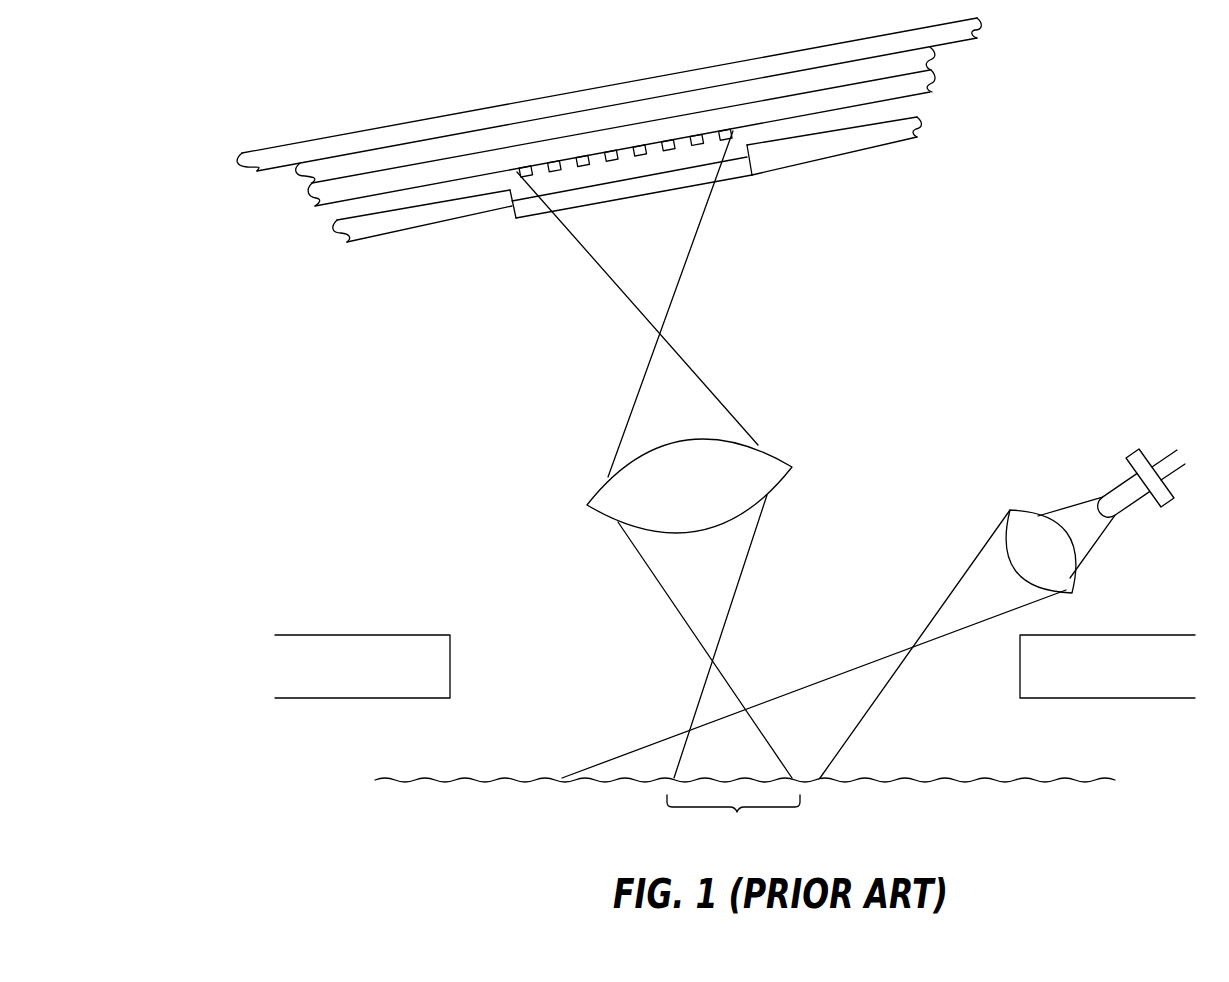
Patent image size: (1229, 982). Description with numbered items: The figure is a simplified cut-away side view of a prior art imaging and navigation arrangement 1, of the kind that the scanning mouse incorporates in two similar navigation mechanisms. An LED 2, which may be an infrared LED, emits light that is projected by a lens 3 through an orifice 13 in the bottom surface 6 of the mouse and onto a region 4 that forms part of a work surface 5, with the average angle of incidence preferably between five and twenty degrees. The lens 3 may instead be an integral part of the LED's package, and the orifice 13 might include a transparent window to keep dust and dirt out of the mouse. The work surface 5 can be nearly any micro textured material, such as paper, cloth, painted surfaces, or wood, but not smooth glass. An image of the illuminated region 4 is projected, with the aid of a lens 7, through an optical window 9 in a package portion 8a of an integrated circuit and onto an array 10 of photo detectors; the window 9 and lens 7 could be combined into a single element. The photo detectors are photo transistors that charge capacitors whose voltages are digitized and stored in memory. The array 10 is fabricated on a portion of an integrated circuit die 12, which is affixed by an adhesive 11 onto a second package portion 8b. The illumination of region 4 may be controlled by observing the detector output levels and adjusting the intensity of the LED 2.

The imaging and navigation arrangement 1 is at (1125, 120).
The LED 2 is at (1112, 485).
The lens 3 is at (1008, 512).
The region 4 is at (733, 823).
The work surface 5 is at (933, 778).
The bottom surface 6 is at (329, 635).
The lens 7 is at (595, 493).
The package portion 8a is at (350, 244).
The package portion 8b is at (256, 179).
The optical window 9 is at (523, 222).
The array of photo detectors 10 is at (637, 150).
The adhesive 11 is at (292, 190).
The integrated circuit die 12 is at (308, 212).
The orifice 13 is at (562, 656).